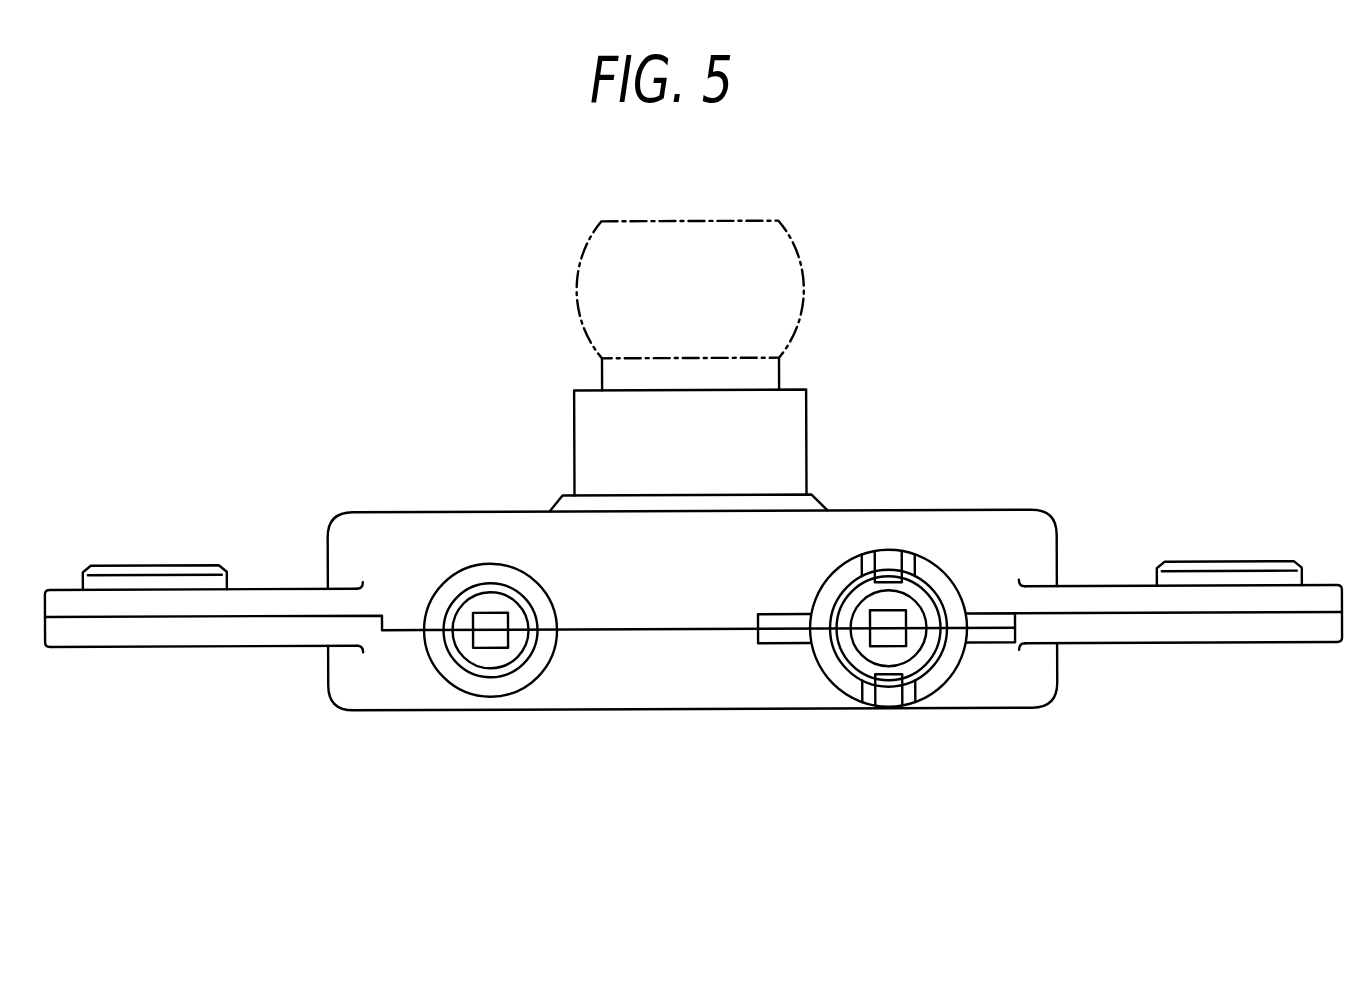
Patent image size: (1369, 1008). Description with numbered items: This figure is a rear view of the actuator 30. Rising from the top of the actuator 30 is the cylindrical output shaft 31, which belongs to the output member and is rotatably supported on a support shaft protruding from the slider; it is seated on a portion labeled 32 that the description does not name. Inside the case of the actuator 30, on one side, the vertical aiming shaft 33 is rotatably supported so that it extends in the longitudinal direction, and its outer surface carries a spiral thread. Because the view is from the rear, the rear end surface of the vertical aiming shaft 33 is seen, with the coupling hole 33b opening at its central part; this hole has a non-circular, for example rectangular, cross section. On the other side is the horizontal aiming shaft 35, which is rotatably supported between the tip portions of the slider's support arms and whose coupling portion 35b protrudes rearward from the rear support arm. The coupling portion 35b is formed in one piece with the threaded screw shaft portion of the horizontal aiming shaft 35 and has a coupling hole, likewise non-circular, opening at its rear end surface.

The actuator 30 is at (958, 332).
The output shaft 31 is at (795, 243).
The housing 32 is at (916, 522).
The vertical aiming shaft 33 is at (487, 657).
The coupling hole 33b is at (495, 632).
The horizontal aiming shaft 35 is at (880, 657).
The coupling portion 35b is at (893, 628).